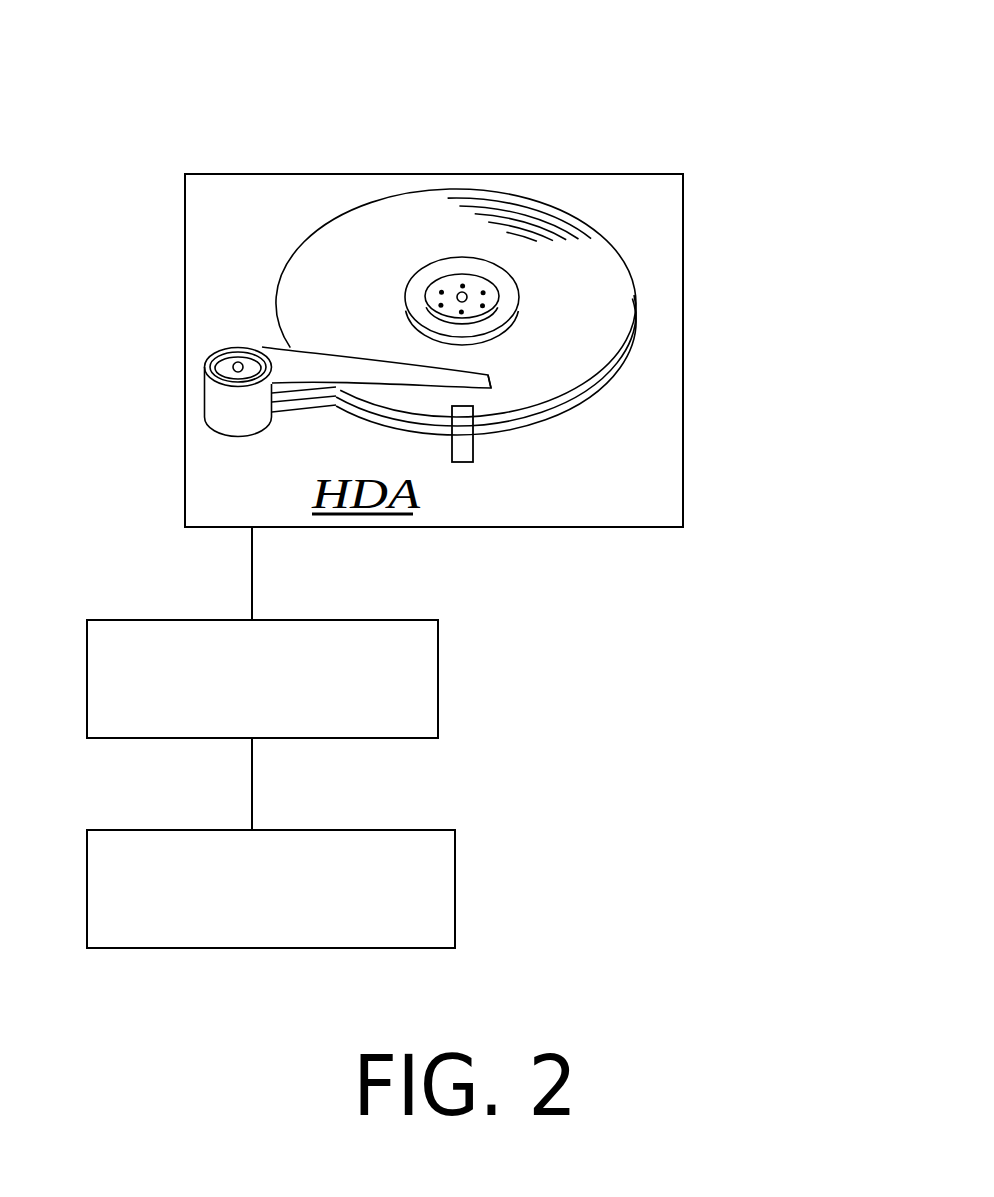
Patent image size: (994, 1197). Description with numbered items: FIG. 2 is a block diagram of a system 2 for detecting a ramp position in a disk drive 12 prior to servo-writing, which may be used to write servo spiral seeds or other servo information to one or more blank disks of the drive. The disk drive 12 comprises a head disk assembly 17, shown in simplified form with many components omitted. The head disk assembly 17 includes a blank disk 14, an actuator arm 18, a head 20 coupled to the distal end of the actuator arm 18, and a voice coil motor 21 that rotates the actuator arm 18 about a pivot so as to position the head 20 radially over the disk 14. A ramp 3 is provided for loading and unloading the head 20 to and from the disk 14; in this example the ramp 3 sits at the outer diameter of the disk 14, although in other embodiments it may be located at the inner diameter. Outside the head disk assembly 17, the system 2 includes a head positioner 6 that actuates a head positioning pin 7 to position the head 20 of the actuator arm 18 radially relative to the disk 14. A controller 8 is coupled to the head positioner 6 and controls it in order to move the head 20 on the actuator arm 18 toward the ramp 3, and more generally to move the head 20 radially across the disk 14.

The system 2 is at (676, 76).
The ramp 3 is at (480, 455).
The head positioner 6 is at (357, 620).
The head positioning pin 7 is at (242, 590).
The controller 8 is at (357, 830).
The disk drive 12 is at (683, 465).
The blank disk 14 is at (575, 363).
The head disk assembly 17 is at (603, 527).
The actuator arm 18 is at (414, 366).
The head 20 is at (495, 378).
The voice coil motor 21 is at (214, 335).